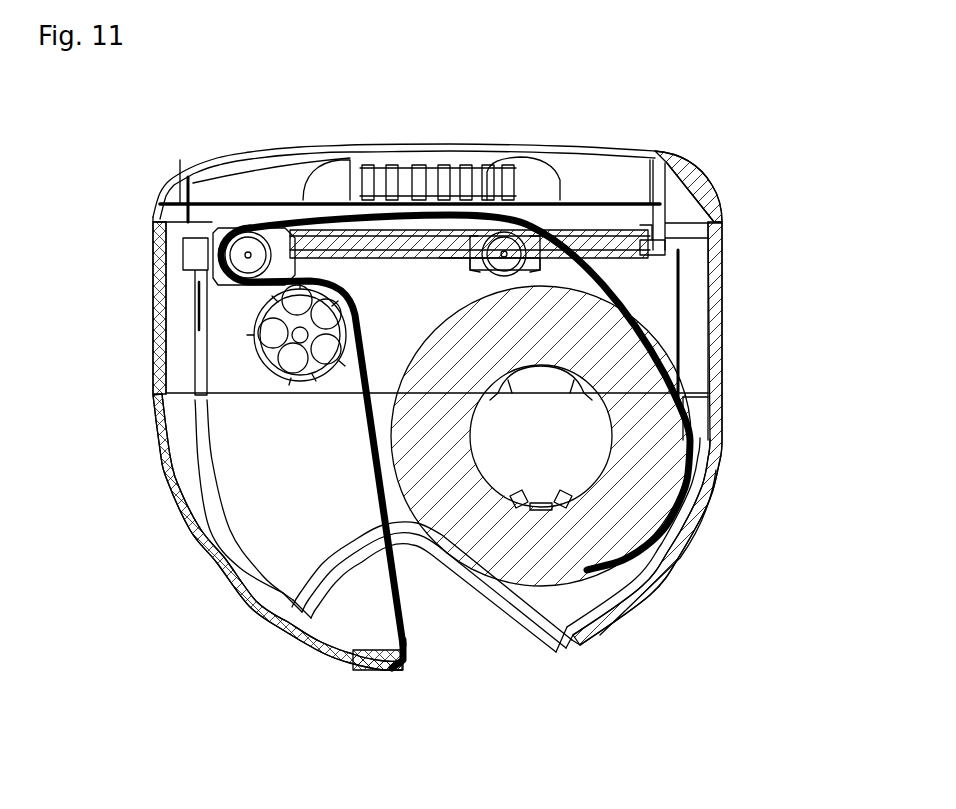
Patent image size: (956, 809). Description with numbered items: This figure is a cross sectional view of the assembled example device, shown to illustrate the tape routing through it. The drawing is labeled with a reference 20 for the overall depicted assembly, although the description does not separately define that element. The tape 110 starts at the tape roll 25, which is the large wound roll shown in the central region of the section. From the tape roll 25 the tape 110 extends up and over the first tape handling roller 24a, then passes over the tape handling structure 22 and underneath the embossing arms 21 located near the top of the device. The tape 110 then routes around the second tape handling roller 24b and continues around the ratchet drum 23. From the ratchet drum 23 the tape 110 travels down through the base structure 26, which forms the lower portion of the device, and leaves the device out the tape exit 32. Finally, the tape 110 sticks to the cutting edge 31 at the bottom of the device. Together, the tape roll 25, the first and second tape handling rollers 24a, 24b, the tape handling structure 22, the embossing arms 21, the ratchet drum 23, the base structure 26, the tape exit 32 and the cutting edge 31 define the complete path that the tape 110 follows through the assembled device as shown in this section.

The housing 20 is at (714, 175).
The embossing arms 21 is at (674, 243).
The tape handling structure 22 is at (636, 260).
The ratchet drum 23 is at (240, 326).
The first tape handling roller 24a is at (504, 200).
The second tape handling roller 24b is at (208, 254).
The tape roll 25 is at (662, 508).
The base structure 26 is at (667, 580).
The cutting edge 31 is at (408, 668).
The tape exit 32 is at (422, 578).
The tape 110 is at (407, 619).